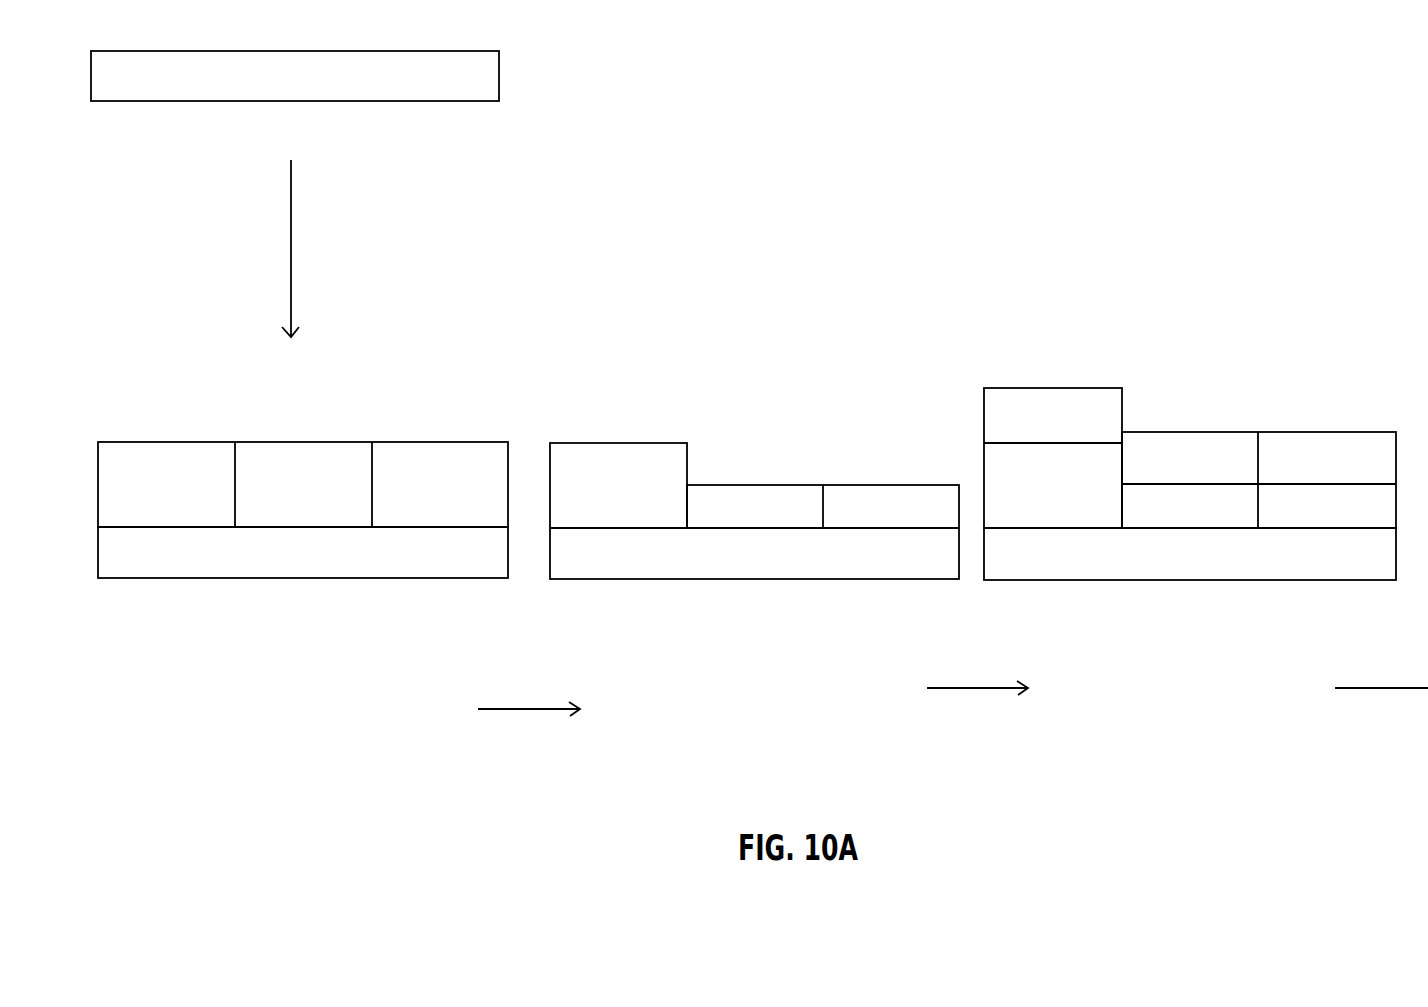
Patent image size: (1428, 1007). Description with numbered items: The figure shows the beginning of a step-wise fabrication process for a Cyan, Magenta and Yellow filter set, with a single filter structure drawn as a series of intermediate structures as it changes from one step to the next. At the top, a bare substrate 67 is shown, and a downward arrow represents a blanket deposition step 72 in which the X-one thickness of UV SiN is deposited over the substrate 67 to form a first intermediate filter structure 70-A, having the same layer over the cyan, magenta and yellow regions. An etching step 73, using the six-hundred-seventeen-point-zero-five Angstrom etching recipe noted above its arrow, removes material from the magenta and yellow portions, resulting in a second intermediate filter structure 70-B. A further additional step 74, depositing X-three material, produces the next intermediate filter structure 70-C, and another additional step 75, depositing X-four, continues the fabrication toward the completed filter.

The substrate 67 is at (174, 102).
The deposition step 72 is at (291, 237).
The first intermediate filter structure 70-A is at (402, 412).
The second intermediate filter structure 70-B is at (768, 406).
The intermediate filter structure 70-C is at (1198, 358).
The etching step 73 is at (528, 709).
The additional step 74 is at (970, 688).
The additional step 75 is at (1373, 688).